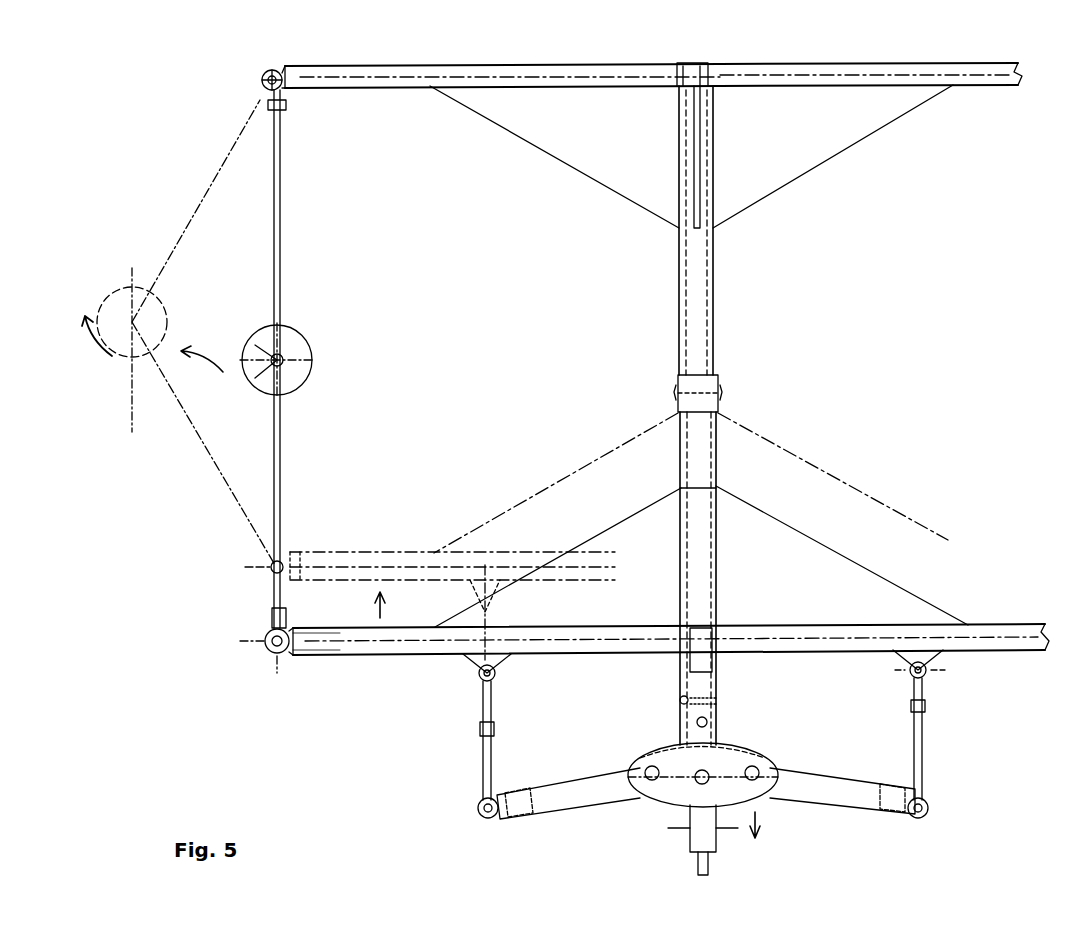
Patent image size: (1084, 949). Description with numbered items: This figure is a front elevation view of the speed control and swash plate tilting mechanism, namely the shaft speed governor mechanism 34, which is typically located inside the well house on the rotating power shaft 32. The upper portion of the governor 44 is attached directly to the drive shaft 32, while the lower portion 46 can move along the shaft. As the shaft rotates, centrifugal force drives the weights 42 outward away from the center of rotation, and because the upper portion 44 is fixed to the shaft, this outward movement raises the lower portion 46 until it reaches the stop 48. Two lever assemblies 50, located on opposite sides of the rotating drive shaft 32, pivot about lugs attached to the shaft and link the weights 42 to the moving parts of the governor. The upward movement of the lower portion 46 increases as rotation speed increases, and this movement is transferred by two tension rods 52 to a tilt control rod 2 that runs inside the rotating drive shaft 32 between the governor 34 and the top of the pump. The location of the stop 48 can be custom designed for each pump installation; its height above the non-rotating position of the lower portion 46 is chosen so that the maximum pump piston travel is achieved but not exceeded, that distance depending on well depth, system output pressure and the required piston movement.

The tilt control rod 2 is at (695, 865).
The power shaft 32 is at (715, 296).
The shaft speed governor mechanism 34 is at (569, 52).
The weights 42 is at (122, 360).
The upper portion of the governor 44 is at (847, 78).
The lower portion of the governor 46 is at (413, 648).
The stop 48 is at (722, 392).
The lever assemblies 50 is at (813, 790).
The tension rods 52 is at (280, 276).